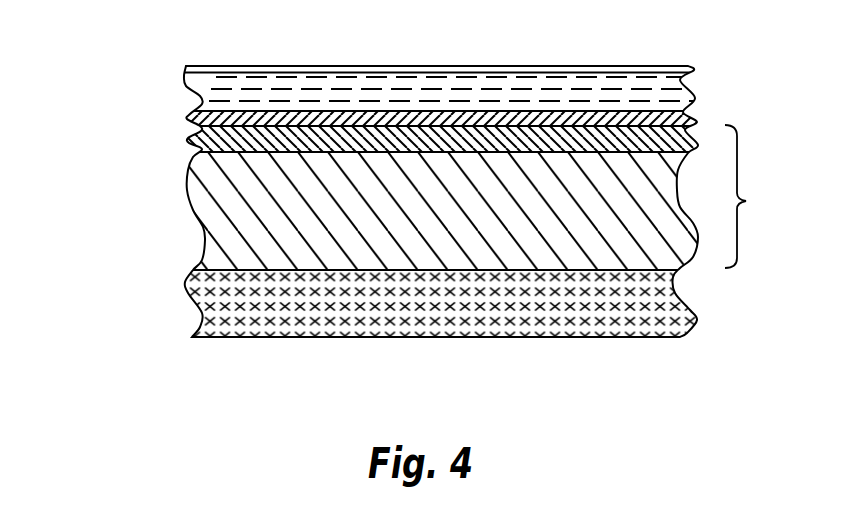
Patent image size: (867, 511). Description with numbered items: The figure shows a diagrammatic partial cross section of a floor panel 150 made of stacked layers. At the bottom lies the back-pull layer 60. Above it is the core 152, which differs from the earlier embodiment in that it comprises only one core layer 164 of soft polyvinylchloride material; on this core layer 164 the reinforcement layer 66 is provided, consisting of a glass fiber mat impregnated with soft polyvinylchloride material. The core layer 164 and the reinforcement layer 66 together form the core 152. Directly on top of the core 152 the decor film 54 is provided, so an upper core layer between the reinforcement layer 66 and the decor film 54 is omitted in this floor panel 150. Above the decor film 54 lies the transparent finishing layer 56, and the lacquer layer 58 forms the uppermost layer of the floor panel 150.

The floor panel 150 is at (216, 371).
The lacquer layer 58 is at (187, 68).
The transparent finishing layer 56 is at (196, 88).
The decor film 54 is at (192, 119).
The reinforcement layer 66 is at (196, 144).
The core layer 164 is at (250, 215).
The back-pull layer 60 is at (235, 307).
The core 152 is at (766, 196).